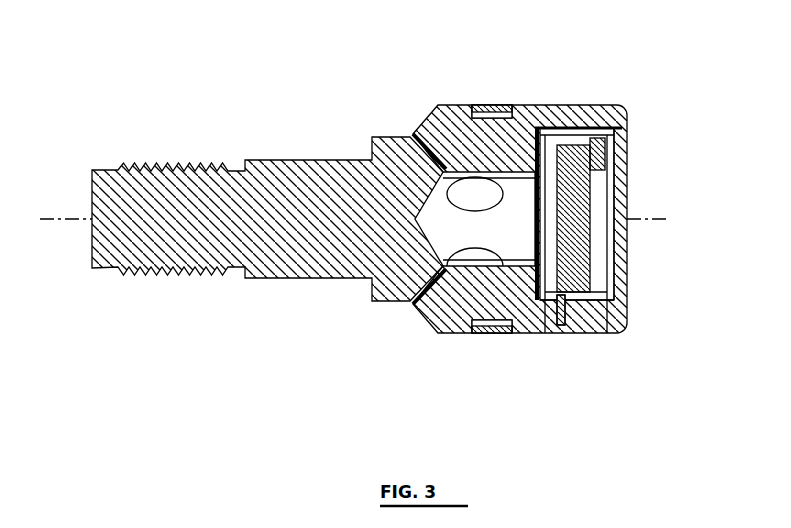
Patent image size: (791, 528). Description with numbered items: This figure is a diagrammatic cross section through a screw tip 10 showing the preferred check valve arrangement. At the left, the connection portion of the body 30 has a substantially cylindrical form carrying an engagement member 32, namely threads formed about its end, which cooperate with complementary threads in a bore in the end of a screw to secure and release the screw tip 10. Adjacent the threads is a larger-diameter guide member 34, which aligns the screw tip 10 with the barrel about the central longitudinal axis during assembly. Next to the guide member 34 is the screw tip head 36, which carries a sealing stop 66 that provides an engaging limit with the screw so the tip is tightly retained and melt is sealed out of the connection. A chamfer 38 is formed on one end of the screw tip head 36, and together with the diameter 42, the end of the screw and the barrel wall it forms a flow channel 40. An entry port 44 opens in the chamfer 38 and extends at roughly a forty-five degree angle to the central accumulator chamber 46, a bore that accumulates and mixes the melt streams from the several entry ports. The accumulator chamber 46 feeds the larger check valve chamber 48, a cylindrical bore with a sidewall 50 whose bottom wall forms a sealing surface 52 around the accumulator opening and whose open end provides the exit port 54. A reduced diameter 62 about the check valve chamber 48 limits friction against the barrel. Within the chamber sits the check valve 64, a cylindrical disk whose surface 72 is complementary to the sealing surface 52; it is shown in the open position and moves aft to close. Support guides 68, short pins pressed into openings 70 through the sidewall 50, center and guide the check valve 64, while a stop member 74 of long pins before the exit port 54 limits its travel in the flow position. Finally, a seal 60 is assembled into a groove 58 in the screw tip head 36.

The screw tip 10 is at (322, 352).
The body 30 is at (317, 145).
The engagement member 32 is at (165, 278).
The guide member 34 is at (265, 160).
The screw tip head 36 is at (388, 418).
The chamfer 38 is at (425, 332).
The flow channel 40 is at (393, 108).
The diameter 42 is at (380, 302).
The entry port 44 is at (430, 112).
The accumulator chamber 46 is at (512, 185).
The check valve chamber 48 is at (620, 325).
The sidewall 50 is at (612, 303).
The sealing surface 52 is at (540, 140).
The exit port 54 is at (640, 200).
The groove 58 is at (500, 105).
The seal 60 is at (487, 335).
The reduced diameter 62 is at (582, 333).
The check valve 64 is at (590, 232).
The sealing stop 66 is at (372, 282).
The support guide 68 is at (560, 333).
The opening 70 is at (565, 333).
The surface 72 is at (600, 190).
The stop member 74 is at (603, 272).